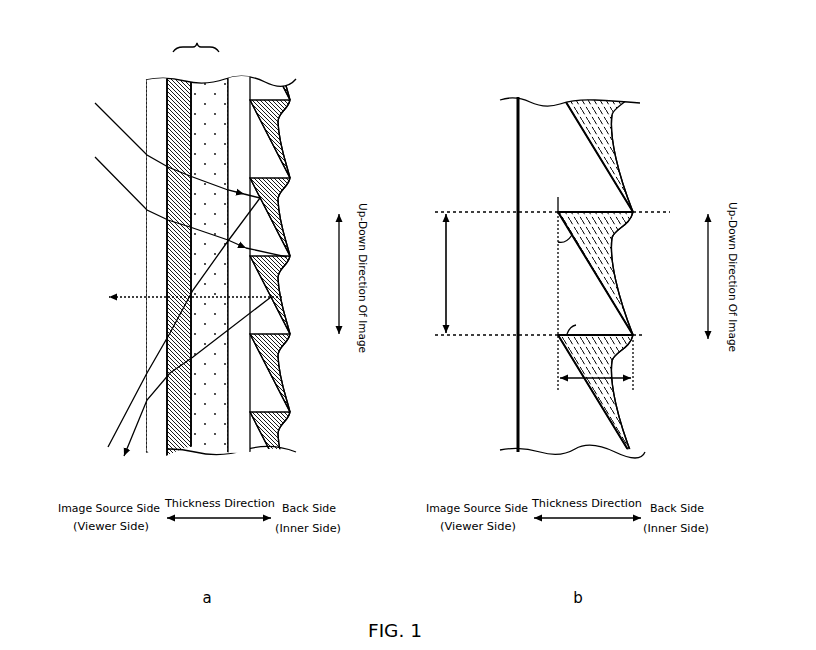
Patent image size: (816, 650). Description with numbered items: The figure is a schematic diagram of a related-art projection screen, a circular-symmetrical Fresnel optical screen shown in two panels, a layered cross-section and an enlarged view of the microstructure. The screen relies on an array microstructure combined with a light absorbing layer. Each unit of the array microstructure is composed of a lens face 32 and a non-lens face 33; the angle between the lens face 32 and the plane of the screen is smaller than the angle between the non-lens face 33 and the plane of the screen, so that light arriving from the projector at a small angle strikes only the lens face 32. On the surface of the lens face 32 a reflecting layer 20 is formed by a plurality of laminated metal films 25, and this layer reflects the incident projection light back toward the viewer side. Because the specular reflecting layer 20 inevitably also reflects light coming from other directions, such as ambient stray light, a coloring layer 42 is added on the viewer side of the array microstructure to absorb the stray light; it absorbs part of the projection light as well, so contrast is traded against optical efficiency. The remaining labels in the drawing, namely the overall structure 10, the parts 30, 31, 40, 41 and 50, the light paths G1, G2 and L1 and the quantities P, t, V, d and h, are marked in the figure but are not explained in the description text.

The reflective screen 10 is at (313, 51).
The reflecting layer 20 is at (283, 137).
The metal films 25 is at (622, 157).
The base material layer 30 is at (240, 80).
The second (non-reflective) surface of prism 31 is at (274, 168).
The lens face 32 is at (280, 127).
The non-lens face 33 is at (290, 91).
The light diffusion layer 40 is at (196, 39).
The diffusion layer 41 is at (208, 80).
The coloring layer 42 is at (177, 80).
The protective (front) layer 50 is at (160, 80).
The image light ray G1 is at (110, 172).
The image light ray G2 is at (110, 118).
The reflected light L1 is at (121, 420).
The prism pitch P is at (546, 273).
The prism tip t is at (637, 213).
The vertical reference line V is at (557, 205).
The prism depth d is at (595, 302).
The prism height h is at (568, 382).